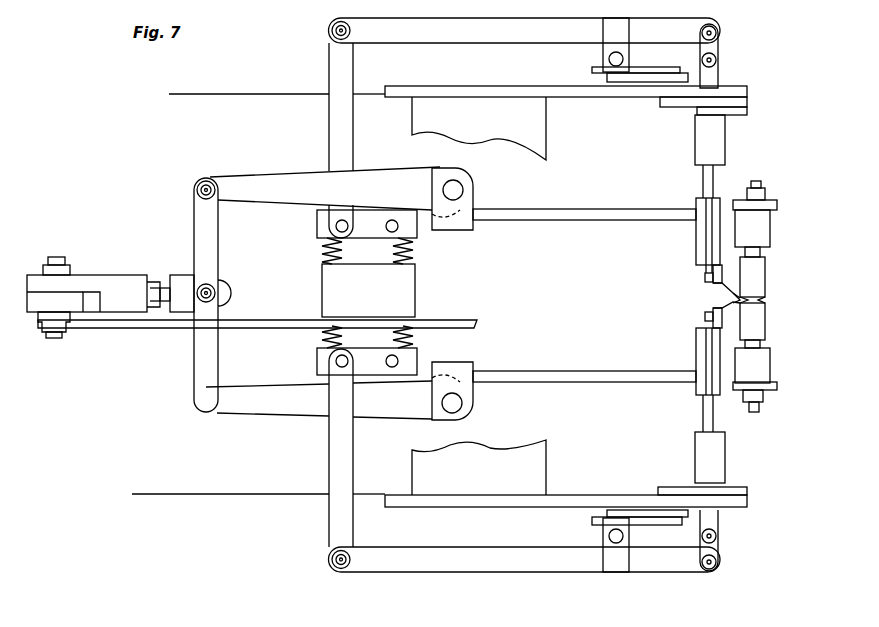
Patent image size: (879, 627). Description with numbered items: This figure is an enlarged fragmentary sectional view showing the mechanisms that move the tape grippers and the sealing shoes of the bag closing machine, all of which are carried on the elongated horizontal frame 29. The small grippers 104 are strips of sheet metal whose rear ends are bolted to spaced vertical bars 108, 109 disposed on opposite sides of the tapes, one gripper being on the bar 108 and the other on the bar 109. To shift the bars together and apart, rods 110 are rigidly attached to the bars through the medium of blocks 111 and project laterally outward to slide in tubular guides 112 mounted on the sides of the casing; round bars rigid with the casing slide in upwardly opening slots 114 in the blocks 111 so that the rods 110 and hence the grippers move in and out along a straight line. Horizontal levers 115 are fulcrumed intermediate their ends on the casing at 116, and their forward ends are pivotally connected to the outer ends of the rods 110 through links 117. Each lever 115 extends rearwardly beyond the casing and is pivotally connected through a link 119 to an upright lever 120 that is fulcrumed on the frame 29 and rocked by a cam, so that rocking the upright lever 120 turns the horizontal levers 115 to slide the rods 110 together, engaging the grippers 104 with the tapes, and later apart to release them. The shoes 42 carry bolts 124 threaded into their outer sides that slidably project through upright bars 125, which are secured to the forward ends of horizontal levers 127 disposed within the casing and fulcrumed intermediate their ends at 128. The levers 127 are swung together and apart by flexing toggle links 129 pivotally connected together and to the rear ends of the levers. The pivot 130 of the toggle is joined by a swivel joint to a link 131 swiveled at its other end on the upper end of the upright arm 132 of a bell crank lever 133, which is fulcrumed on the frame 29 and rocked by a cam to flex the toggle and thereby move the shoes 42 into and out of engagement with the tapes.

The frame 29 is at (260, 496).
The shoes 42 is at (758, 302).
The grippers 104 is at (733, 298).
The vertical bar 108 is at (710, 322).
The vertical bar 109 is at (708, 281).
The rods 110 is at (713, 80).
The blocks 111 is at (698, 250).
The tubular guides 112 is at (722, 142).
The slots 114 is at (707, 236).
The horizontal levers 115 is at (537, 22).
The fulcrums 116 is at (609, 59).
The links 117 is at (717, 56).
The link 119 is at (329, 133).
The upright lever 120 is at (335, 226).
The bolts 124 is at (757, 196).
The upright bars 125 is at (770, 354).
The horizontal levers 127 is at (578, 210).
The fulcrum 128 is at (456, 189).
The toggle links 129 is at (217, 246).
The pivot 130 is at (221, 296).
The link 131 is at (134, 278).
The upright arm 132 is at (76, 308).
The bell crank lever 133 is at (456, 320).